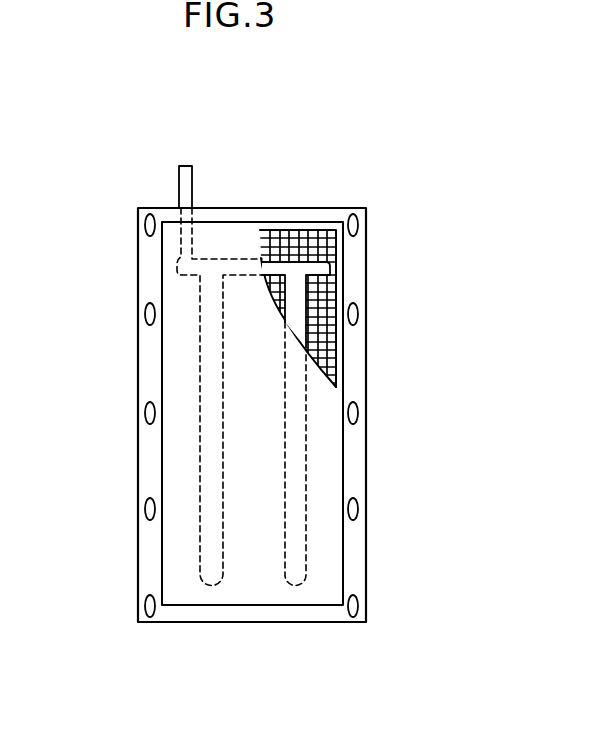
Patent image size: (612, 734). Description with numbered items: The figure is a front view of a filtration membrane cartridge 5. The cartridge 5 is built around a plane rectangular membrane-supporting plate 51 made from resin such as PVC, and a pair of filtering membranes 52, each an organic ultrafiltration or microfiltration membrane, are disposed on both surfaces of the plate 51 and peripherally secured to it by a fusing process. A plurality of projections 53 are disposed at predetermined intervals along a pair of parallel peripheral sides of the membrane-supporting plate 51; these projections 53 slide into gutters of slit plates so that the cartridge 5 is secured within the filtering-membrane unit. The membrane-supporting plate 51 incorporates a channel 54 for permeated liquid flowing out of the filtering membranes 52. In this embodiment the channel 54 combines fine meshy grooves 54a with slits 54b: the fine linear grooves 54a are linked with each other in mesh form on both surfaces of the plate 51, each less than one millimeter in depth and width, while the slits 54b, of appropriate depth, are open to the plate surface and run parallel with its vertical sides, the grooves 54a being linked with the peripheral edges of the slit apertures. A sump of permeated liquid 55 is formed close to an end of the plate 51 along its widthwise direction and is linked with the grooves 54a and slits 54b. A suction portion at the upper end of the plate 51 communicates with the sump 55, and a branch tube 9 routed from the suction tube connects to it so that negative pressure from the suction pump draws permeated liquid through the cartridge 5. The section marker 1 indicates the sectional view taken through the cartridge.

The section line I-I 1 is at (185, 160).
The filtration membrane cartridge 5 is at (118, 449).
The branch tube 9 is at (188, 178).
The membrane-supporting plate 51 is at (353, 362).
The filtering membrane 52 is at (330, 566).
The projection 53 is at (143, 226).
The channel for permeated liquid 54 is at (361, 308).
The fine meshy grooves 54a is at (340, 293).
The slits 54b is at (298, 320).
The sump of permeated liquid 55 is at (330, 262).